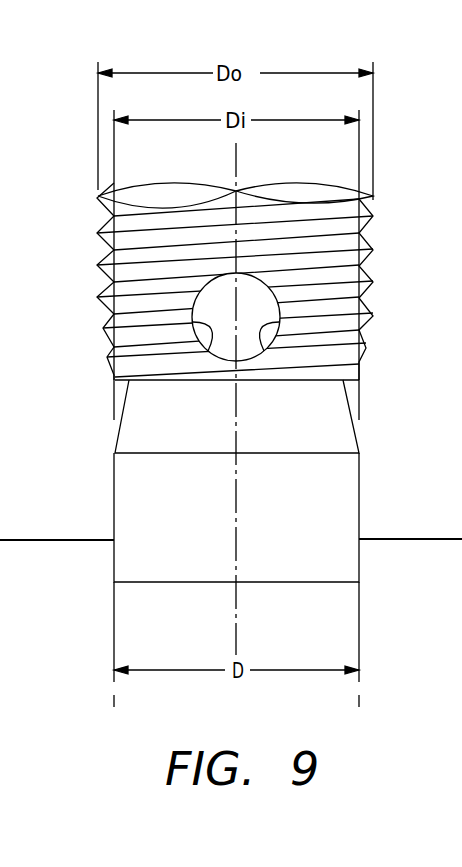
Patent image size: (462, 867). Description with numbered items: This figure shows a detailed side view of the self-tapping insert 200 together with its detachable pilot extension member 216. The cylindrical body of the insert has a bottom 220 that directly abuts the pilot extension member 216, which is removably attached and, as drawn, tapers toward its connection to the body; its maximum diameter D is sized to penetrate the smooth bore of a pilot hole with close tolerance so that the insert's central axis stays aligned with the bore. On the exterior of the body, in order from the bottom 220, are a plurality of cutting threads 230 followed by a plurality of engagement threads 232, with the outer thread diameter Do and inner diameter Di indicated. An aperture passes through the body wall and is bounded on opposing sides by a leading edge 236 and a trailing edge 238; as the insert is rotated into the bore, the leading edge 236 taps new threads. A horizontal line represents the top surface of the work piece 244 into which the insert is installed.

The plug assembly 200 is at (239, 407).
The detachable pilot extension member 216 is at (338, 494).
The bottom 220 is at (322, 382).
The cutting threads 230 is at (376, 304).
The engagement threads 232 is at (388, 185).
The leading edge 236 is at (267, 358).
The trailing edge 238 is at (202, 358).
The work piece 244 is at (447, 600).